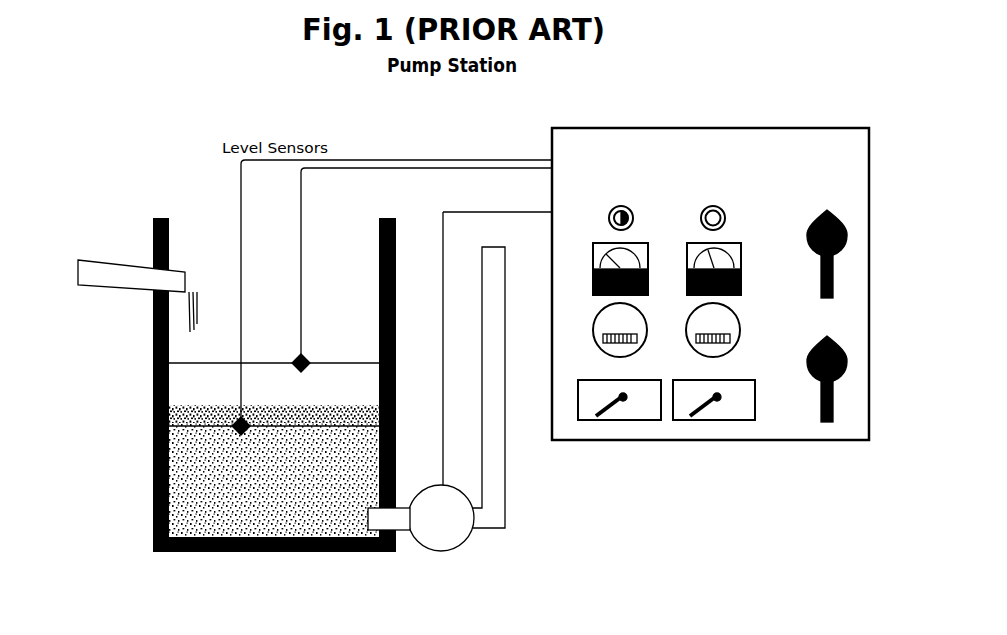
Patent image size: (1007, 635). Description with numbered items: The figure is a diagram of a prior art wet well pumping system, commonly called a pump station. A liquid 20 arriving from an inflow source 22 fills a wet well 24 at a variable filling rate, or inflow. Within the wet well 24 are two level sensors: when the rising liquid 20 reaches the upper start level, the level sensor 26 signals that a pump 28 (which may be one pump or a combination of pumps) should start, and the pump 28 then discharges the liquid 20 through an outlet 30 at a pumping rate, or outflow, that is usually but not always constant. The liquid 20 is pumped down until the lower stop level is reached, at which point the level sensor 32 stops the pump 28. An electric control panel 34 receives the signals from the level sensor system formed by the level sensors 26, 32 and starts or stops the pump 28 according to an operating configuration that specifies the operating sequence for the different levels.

The liquid 20 is at (204, 405).
The inflow source 22 is at (78, 274).
The wet well 24 is at (153, 245).
The level sensor 26 is at (312, 363).
The pump 28 is at (453, 540).
The outlet 30 is at (366, 522).
The level sensor 32 is at (255, 425).
The electric control panel 34 is at (550, 145).